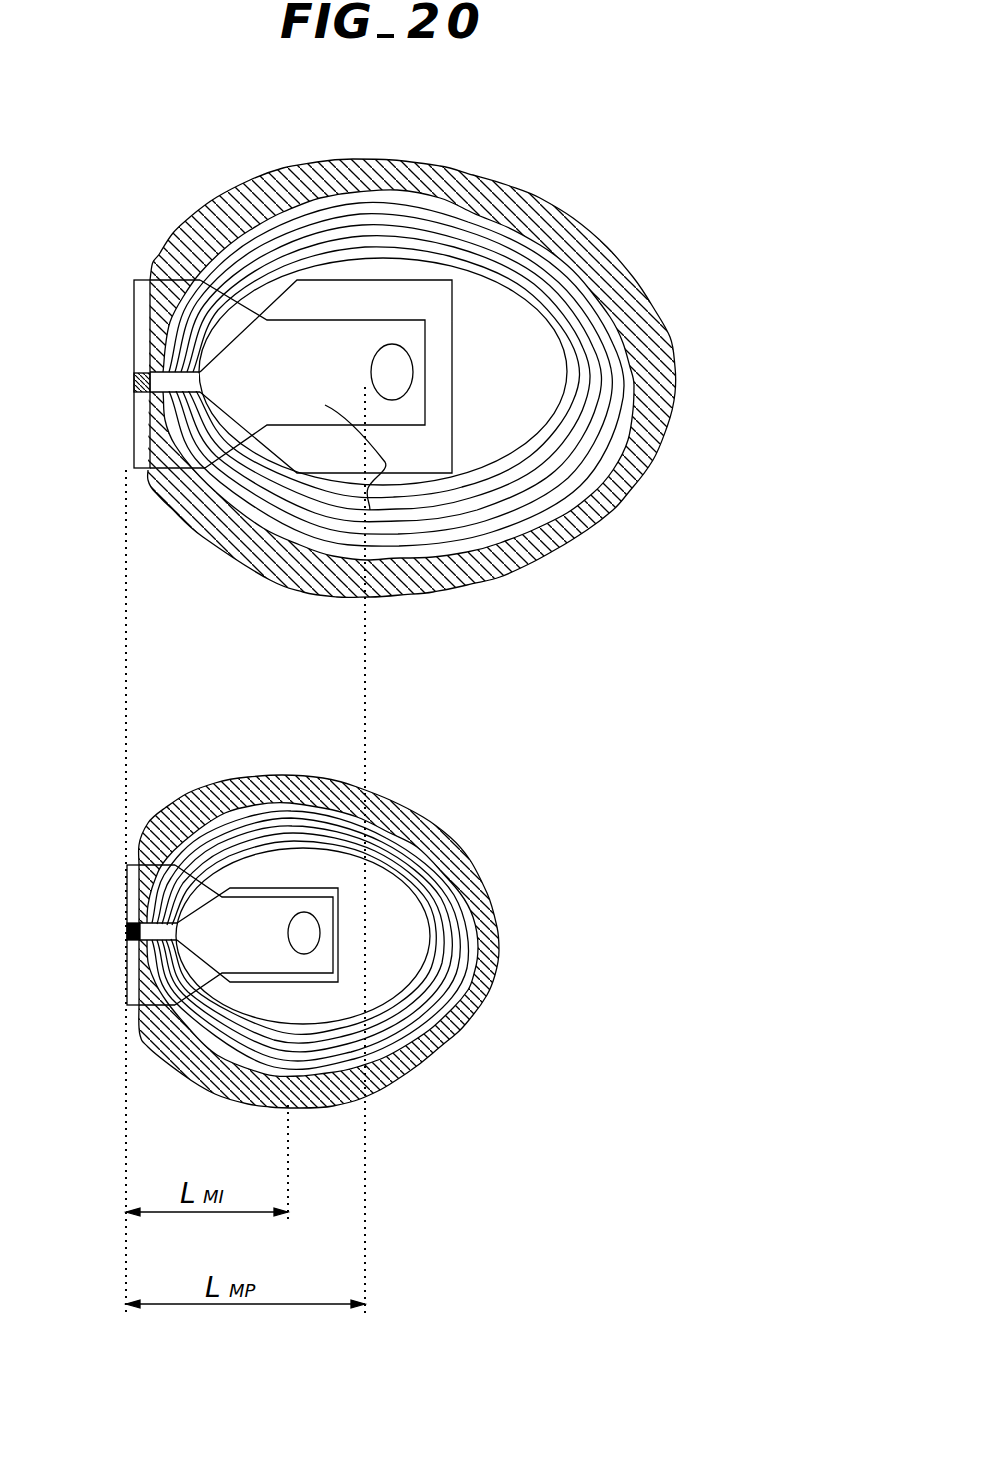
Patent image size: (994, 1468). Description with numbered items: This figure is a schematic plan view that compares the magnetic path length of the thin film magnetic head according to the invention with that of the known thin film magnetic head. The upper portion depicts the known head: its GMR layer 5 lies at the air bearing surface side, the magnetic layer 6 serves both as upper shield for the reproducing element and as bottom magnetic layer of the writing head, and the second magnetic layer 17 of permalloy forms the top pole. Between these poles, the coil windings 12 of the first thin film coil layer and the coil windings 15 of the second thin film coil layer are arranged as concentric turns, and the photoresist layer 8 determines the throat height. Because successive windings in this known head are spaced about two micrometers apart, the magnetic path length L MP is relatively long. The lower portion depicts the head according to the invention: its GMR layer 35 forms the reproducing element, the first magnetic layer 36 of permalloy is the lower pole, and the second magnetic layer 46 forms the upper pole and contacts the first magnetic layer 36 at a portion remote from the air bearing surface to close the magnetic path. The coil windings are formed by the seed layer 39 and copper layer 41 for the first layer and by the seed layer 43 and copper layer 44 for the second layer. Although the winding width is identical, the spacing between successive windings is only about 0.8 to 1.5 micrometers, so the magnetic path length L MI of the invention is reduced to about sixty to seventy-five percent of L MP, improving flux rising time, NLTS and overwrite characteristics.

The photoresist layer 8 is at (355, 182).
The second magnetic layer 17 is at (420, 307).
The GMR layer 5 is at (134, 382).
The coil windings of a first thin film coil layer 12 is at (459, 374).
The coil windings of a second thin film coil layer 15 is at (560, 437).
The magnetic layer 6 is at (490, 573).
The first magnetic layer 36 is at (267, 903).
The second magnetic layer 46 is at (317, 887).
The seed layer 39 is at (398, 940).
The copper layer 41 is at (398, 940).
The seed layer 43 is at (398, 940).
The copper layer 44 is at (450, 912).
The GMR layer 35 is at (127, 930).